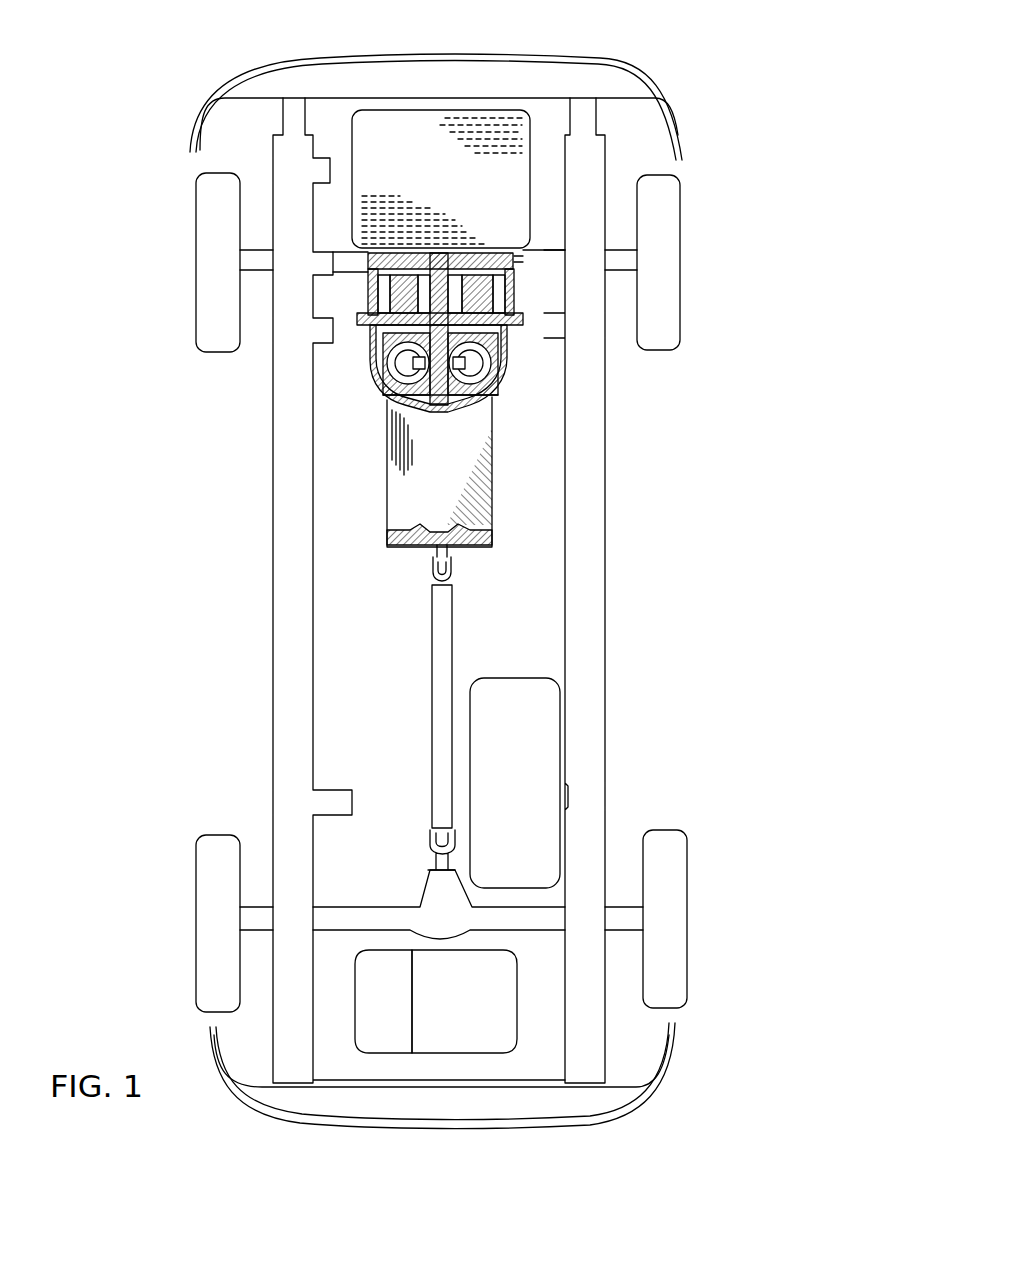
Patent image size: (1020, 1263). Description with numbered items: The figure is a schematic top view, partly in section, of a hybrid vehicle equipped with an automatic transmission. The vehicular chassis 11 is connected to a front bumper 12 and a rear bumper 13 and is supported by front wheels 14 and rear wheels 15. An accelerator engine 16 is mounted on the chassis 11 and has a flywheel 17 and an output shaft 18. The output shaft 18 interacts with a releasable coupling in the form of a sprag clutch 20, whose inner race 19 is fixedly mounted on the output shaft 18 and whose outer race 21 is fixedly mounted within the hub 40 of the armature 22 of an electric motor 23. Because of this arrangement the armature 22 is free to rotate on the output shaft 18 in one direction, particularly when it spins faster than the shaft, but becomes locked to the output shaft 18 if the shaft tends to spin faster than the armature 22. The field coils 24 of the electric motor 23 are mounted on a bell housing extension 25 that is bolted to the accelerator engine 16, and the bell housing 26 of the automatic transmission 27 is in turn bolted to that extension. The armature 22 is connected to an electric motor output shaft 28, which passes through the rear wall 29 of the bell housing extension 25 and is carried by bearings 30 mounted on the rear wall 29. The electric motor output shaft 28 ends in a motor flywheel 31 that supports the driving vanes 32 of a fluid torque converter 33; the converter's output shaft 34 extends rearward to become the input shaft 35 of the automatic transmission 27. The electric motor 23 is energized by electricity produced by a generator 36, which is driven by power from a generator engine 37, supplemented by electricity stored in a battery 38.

The vehicular chassis 11 is at (270, 580).
The front bumper 12 is at (435, 56).
The rear bumper 13 is at (660, 1095).
The front wheels 14 is at (679, 221).
The rear wheels 15 is at (687, 870).
The accelerator engine 16 is at (452, 197).
The flywheel 17 is at (363, 255).
The output shaft 18 is at (427, 258).
The inner race 19 is at (452, 268).
The sprag clutch 20 is at (372, 262).
The outer race 21 is at (460, 275).
The armature 22 is at (530, 270).
The electric motor 23 is at (523, 325).
The field coils 24 is at (515, 290).
The bell housing extension 25 is at (368, 293).
The bell housing 26 is at (383, 378).
The automatic transmission 27 is at (413, 458).
The electric motor output shaft 28 is at (380, 336).
The rear wall 29 is at (513, 333).
The bearings 30 is at (507, 342).
The motor flywheel 31 is at (497, 365).
The driving vanes 32 is at (490, 380).
The fluid torque converter 33 is at (387, 400).
The output shaft 34 is at (387, 405).
The input shaft 35 is at (457, 413).
The generator 36 is at (393, 1019).
The generator engine 37 is at (476, 1004).
The battery 38 is at (525, 803).
The hub 40 is at (478, 252).